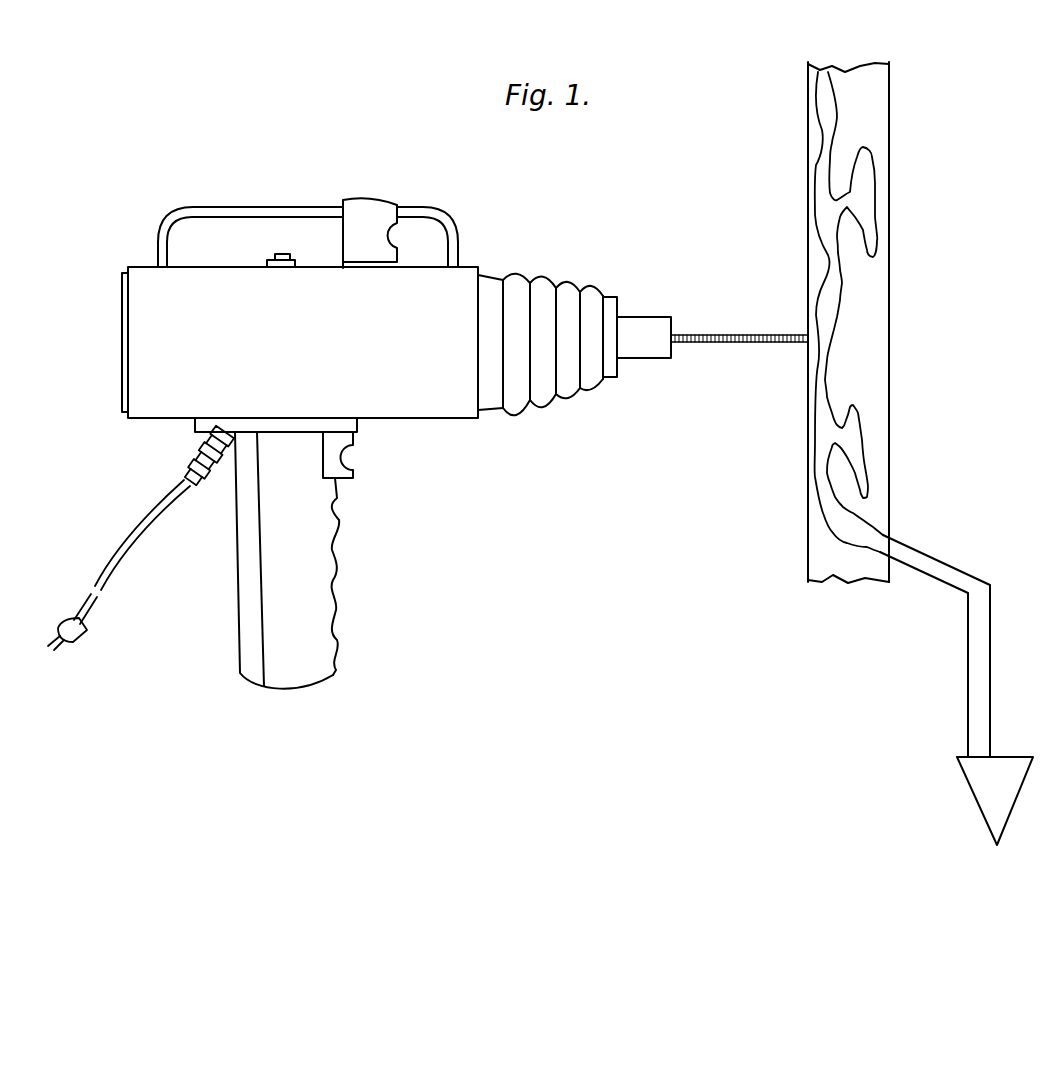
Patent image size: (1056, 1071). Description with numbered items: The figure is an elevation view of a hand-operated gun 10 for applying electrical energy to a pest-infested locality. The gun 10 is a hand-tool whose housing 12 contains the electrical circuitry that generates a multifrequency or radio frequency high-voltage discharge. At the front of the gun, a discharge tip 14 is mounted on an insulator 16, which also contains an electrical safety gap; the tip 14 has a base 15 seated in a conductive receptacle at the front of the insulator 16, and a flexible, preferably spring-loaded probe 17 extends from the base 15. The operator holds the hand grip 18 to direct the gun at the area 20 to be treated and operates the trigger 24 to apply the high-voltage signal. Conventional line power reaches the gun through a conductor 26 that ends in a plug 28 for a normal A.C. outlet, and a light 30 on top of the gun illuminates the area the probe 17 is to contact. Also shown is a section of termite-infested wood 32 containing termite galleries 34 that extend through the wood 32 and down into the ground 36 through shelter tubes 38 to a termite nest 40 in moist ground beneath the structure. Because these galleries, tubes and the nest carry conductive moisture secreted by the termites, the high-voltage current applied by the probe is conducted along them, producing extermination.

The gun 10 is at (487, 234).
The housing 12 is at (139, 267).
The discharge tip 14 is at (677, 362).
The base 15 is at (631, 358).
The insulator 16 is at (575, 283).
The flexible probe 17 is at (712, 333).
The hand grip 18 is at (320, 700).
The area 20 is at (793, 351).
The trigger 24 is at (352, 472).
The conductor 26 is at (117, 573).
The plug 28 is at (83, 633).
The light 30 is at (378, 197).
The termite-infested wood 32 is at (892, 147).
The termite galleries 34 is at (822, 148).
The ground 36 is at (938, 691).
The shelter tubes 38 is at (988, 546).
The termite nest 40 is at (980, 810).